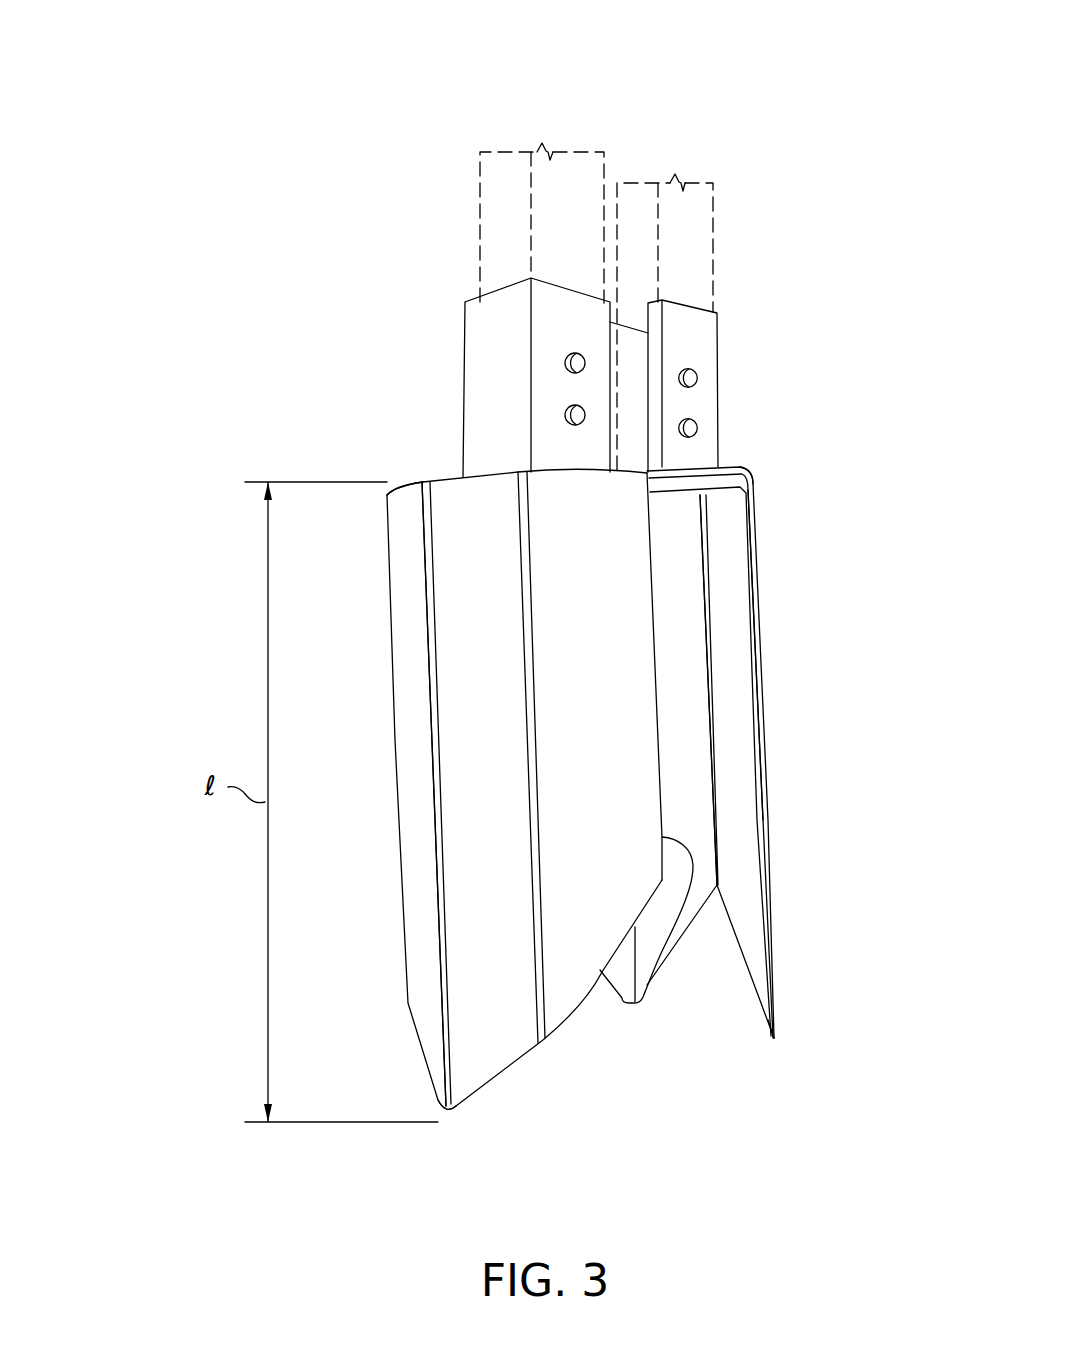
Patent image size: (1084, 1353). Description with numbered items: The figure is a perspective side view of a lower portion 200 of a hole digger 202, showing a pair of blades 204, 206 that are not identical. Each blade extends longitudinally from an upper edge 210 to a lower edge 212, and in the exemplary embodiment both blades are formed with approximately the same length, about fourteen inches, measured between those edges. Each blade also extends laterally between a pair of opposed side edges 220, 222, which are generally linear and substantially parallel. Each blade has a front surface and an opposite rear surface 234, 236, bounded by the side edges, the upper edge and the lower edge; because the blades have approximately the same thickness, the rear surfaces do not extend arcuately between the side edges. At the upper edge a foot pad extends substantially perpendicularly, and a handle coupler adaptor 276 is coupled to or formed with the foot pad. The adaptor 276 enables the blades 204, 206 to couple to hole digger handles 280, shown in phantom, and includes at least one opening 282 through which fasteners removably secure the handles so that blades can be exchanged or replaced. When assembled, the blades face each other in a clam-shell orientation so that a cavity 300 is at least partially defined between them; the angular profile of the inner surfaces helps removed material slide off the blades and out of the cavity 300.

The lower portion 200 is at (187, 377).
The hole digger 202 is at (220, 107).
The blade 204 is at (513, 1000).
The blade 206 is at (767, 757).
The upper edge 210 is at (422, 483).
The lower edge 212 is at (493, 1087).
The side edge 220 is at (643, 1003).
The side edge 222 is at (710, 703).
The rear surface 234 is at (442, 960).
The rear surface 236 is at (755, 622).
The handle coupler adaptor 276 is at (498, 378).
The hole digger handle 280 is at (713, 242).
The opening 282 is at (699, 417).
The cavity 300 is at (713, 565).